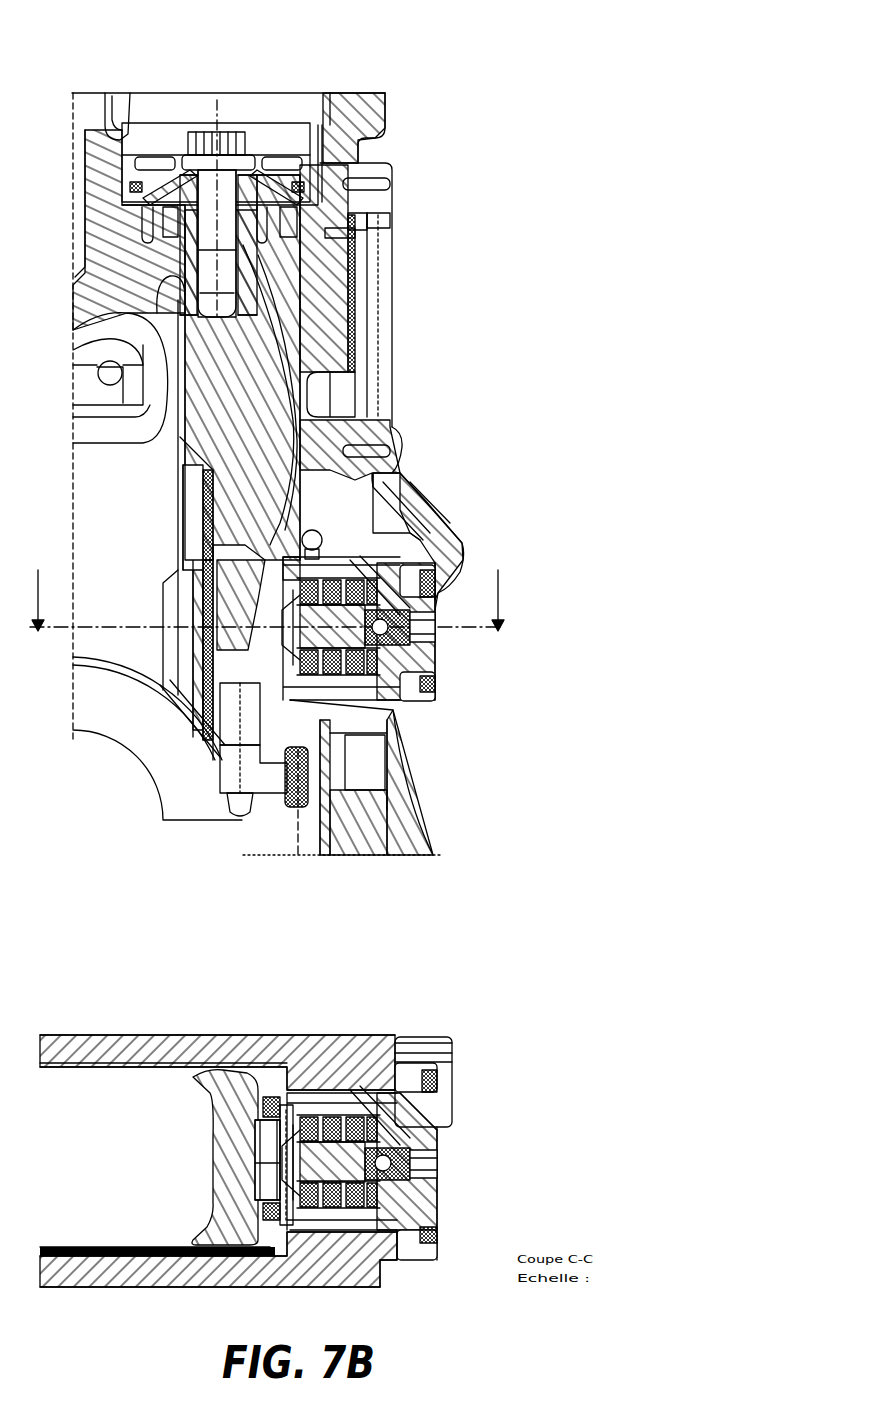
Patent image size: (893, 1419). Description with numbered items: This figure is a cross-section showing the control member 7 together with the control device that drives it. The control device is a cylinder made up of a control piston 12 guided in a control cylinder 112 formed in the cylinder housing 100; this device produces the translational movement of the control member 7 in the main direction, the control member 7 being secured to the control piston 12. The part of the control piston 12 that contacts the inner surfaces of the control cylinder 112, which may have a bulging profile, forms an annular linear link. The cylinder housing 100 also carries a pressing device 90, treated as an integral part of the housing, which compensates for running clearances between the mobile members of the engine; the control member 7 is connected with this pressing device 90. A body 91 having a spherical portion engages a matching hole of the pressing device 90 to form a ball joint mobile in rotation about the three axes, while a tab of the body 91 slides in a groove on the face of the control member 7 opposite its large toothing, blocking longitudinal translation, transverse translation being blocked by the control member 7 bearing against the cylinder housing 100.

The cylinder housing 100 is at (365, 102).
The control cylinder 112 is at (128, 100).
The control piston 12 is at (365, 170).
The control member 7 is at (230, 390).
The pressing device 90 is at (405, 565).
The body 91 is at (280, 1183).